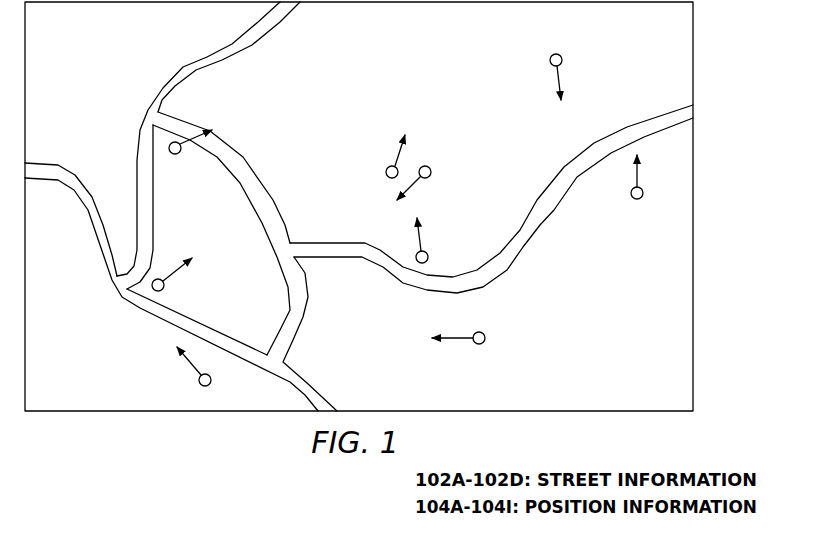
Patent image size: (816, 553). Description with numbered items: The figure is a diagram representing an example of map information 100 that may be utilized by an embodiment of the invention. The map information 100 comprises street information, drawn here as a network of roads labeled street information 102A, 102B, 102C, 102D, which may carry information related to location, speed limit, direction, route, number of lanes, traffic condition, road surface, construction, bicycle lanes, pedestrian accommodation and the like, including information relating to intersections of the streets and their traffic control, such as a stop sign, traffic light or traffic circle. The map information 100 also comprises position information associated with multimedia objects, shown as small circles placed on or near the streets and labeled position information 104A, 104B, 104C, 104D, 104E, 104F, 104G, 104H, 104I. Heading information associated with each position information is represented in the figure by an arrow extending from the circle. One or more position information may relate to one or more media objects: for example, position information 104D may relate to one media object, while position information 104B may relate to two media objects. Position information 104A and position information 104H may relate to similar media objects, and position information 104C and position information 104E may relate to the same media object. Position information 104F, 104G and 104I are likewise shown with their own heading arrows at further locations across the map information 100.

The map information 100 is at (380, 85).
The street information 102A is at (182, 65).
The street information 102B is at (128, 308).
The street information 102C is at (262, 172).
The street information 102D is at (517, 263).
The position information 104A is at (562, 58).
The position information 104B is at (180, 155).
The position information 104C is at (386, 176).
The position information 104D is at (431, 170).
The position information 104E is at (428, 253).
The position information 104F is at (641, 198).
The position information 104G is at (483, 343).
The position information 104H is at (165, 289).
The position information 104I is at (199, 383).